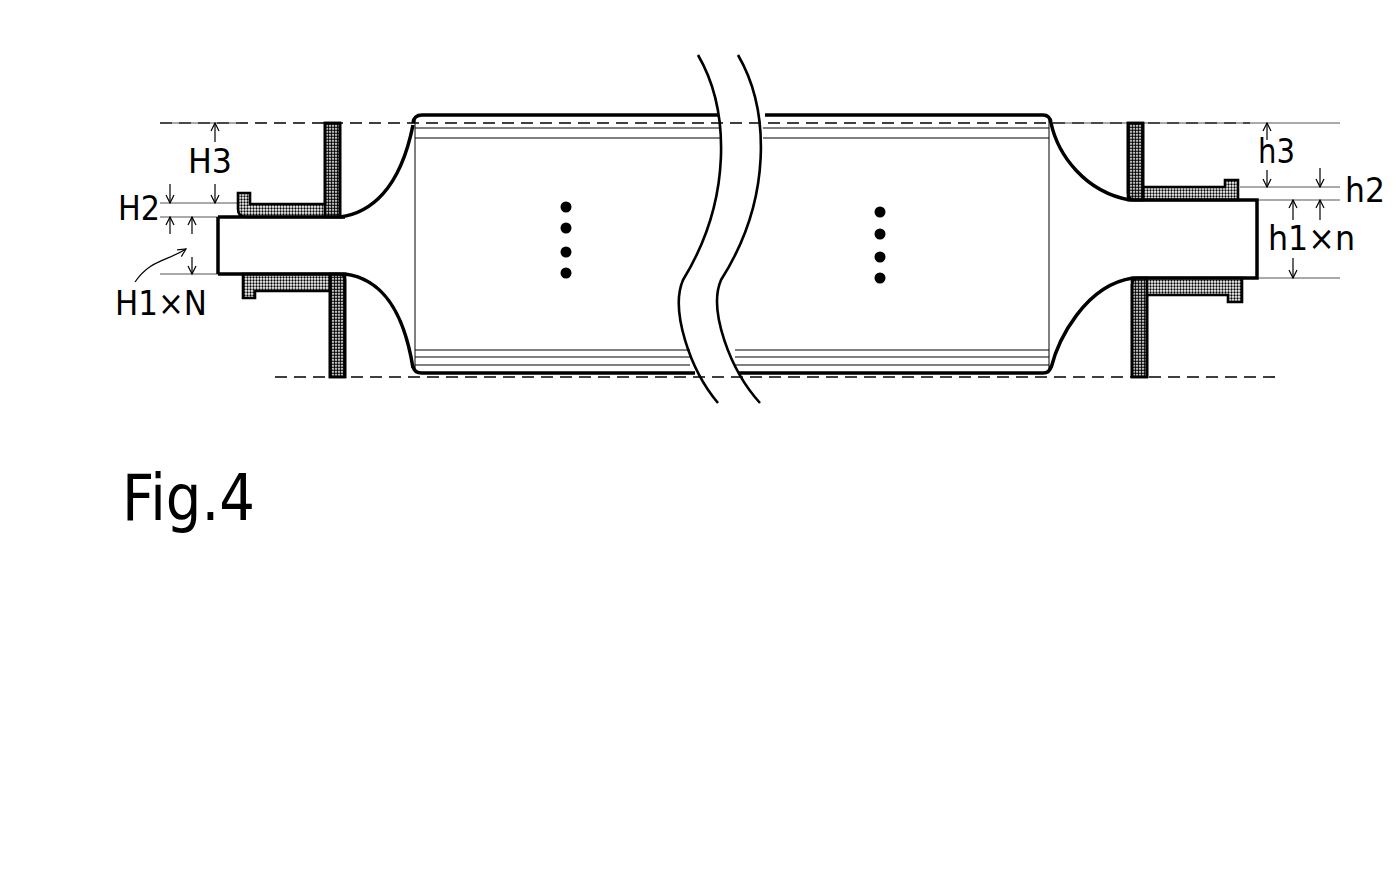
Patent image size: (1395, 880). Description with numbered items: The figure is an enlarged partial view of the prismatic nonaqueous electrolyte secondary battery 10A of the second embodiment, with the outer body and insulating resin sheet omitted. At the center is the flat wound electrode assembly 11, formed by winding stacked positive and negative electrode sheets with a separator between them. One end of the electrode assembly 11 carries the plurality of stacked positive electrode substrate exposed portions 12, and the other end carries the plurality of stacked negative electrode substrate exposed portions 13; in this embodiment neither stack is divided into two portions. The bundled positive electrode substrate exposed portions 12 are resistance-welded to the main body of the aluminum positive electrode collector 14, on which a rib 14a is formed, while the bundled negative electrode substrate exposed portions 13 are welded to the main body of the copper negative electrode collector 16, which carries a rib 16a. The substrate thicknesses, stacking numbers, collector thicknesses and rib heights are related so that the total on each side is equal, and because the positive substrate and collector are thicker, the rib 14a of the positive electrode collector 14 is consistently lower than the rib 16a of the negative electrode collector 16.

The nonaqueous electrolyte secondary battery 10A is at (537, 50).
The flat wound electrode assembly 11 is at (860, 339).
The positive electrode substrate exposed portions 12 is at (1077, 263).
The negative electrode substrate exposed portions 13 is at (388, 263).
The positive electrode collector 14 is at (1192, 187).
The rib 14a is at (1137, 123).
The negative electrode collector 16 is at (283, 203).
The rib 16a is at (334, 125).